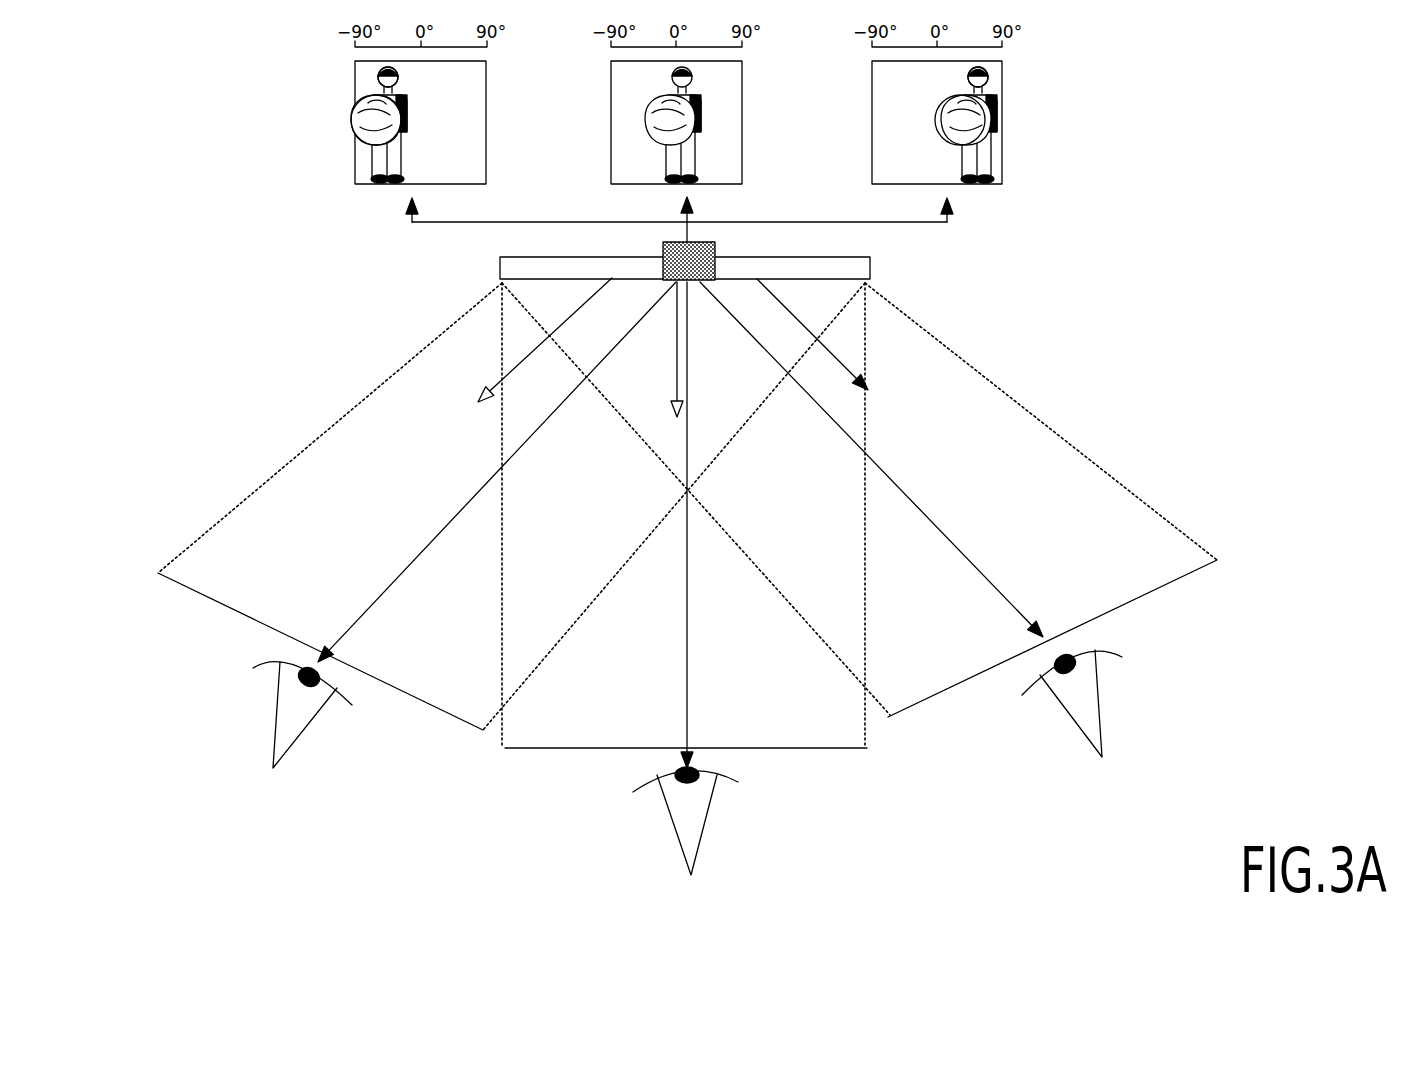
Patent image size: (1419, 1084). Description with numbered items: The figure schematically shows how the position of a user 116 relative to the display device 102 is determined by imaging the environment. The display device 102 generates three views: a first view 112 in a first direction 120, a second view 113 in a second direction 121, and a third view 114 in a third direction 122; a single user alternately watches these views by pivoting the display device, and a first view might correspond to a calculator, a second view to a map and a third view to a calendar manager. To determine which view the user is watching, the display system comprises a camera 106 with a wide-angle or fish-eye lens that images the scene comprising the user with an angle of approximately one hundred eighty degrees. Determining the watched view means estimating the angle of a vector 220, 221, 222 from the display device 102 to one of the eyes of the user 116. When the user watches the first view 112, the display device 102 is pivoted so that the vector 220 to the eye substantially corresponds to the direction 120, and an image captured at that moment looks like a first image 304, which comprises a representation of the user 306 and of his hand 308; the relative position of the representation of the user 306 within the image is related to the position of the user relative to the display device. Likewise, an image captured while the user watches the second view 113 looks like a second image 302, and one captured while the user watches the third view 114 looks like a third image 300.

The display device 102 is at (870, 265).
The camera 106 is at (696, 284).
The first view 112 is at (380, 673).
The second view 113 is at (572, 743).
The third view 114 is at (1132, 603).
The user 116 is at (297, 722).
The first direction 120 is at (532, 340).
The second direction 121 is at (676, 400).
The third direction 122 is at (863, 377).
The vector 220 is at (436, 538).
The vector 221 is at (685, 632).
The vector 222 is at (938, 525).
The third image 300 is at (467, 87).
The second image 302 is at (727, 95).
The first image 304 is at (995, 73).
The representation of the user 306 is at (388, 80).
The hand 308 is at (362, 117).